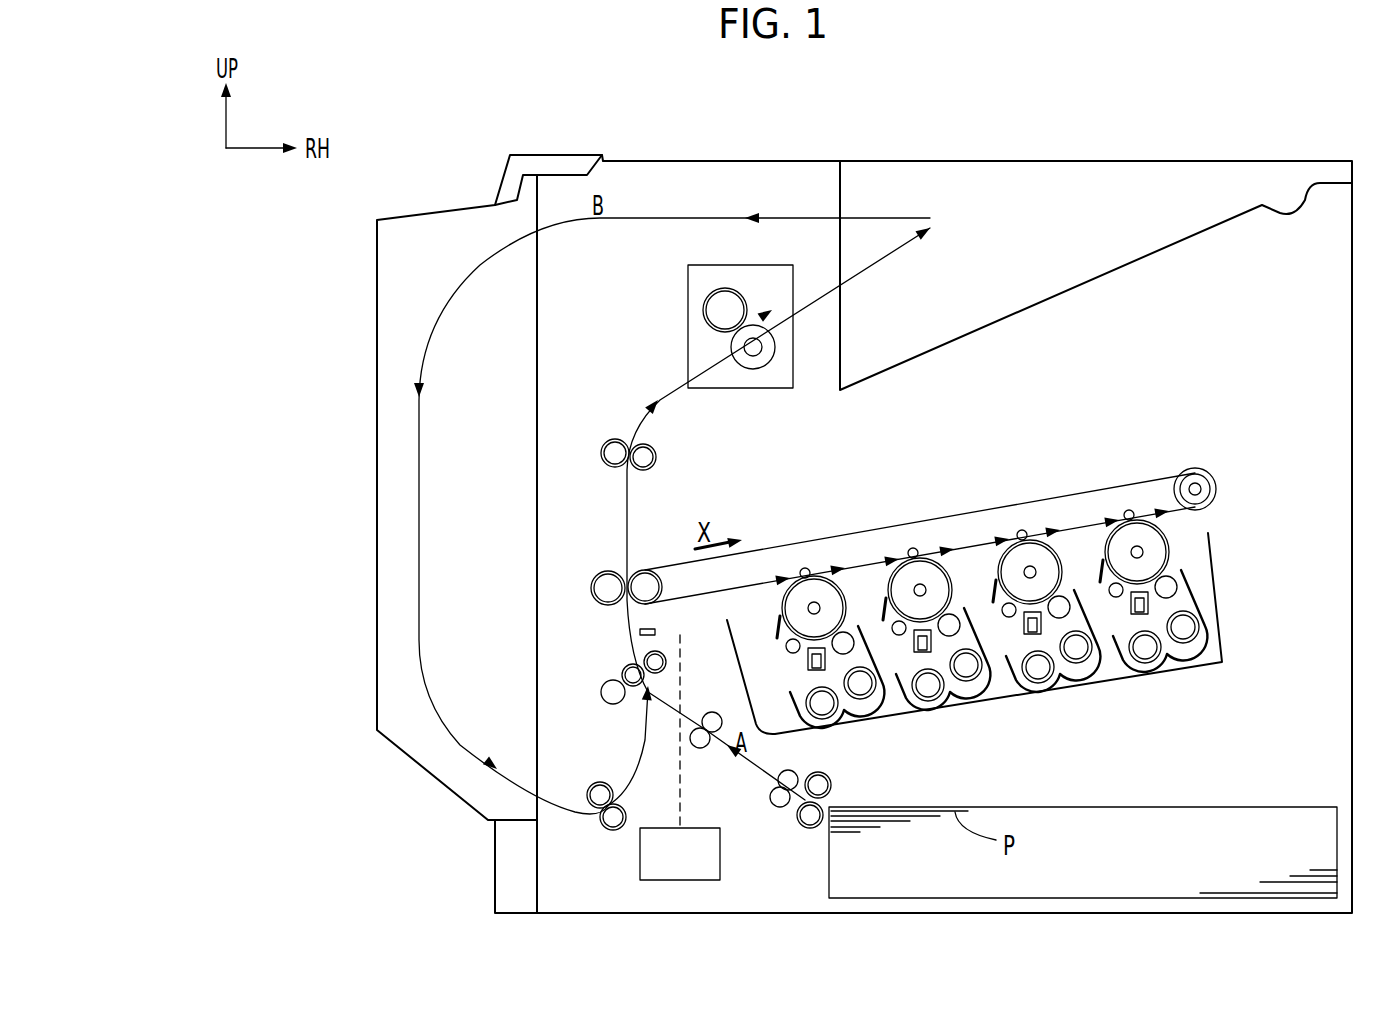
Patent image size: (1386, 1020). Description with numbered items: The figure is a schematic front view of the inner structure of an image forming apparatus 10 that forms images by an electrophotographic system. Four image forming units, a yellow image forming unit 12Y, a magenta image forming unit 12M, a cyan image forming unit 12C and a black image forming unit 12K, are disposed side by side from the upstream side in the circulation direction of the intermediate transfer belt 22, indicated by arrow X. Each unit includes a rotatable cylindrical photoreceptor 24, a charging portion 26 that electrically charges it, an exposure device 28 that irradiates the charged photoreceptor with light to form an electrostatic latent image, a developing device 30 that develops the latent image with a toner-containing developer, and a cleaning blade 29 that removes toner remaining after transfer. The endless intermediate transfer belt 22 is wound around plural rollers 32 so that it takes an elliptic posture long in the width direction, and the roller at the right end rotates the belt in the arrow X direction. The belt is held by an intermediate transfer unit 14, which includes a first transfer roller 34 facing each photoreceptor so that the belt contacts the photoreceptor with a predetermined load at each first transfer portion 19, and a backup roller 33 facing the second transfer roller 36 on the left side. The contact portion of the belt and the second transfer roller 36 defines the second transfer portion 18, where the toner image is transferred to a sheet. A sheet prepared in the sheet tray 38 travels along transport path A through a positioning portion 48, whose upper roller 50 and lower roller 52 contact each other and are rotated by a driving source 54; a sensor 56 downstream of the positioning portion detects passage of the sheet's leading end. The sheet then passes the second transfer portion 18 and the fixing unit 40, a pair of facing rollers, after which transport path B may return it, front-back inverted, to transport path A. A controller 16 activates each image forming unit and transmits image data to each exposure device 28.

The image forming apparatus 10 is at (1100, 134).
The black image forming unit 12K is at (830, 575).
The cyan image forming unit 12C is at (938, 556).
The magenta image forming unit 12M is at (1048, 538).
The yellow image forming unit 12Y is at (1158, 517).
The intermediate transfer unit 14 is at (1004, 468).
The controller 16 is at (640, 855).
The second transfer portion 18 is at (640, 545).
The first transfer portion 19 is at (778, 578).
The intermediate transfer belt 22 is at (1092, 487).
The photoreceptor 24 is at (782, 612).
The charging portion 26 is at (786, 650).
The exposure device 28 is at (807, 672).
The cleaning blade 29 is at (776, 636).
The developing device 30 is at (798, 715).
The rollers 32 is at (1210, 473).
The backup roller 33 is at (680, 553).
The first transfer roller 34 is at (805, 567).
The second transfer roller 36 is at (603, 570).
The sheet tray 38 is at (1255, 806).
The fixing unit 40 is at (688, 296).
The positioning portion 48 is at (604, 640).
The upper roller 50 is at (644, 666).
The lower roller 52 is at (622, 678).
The driving source 54 is at (601, 698).
The sensor 56 is at (658, 632).